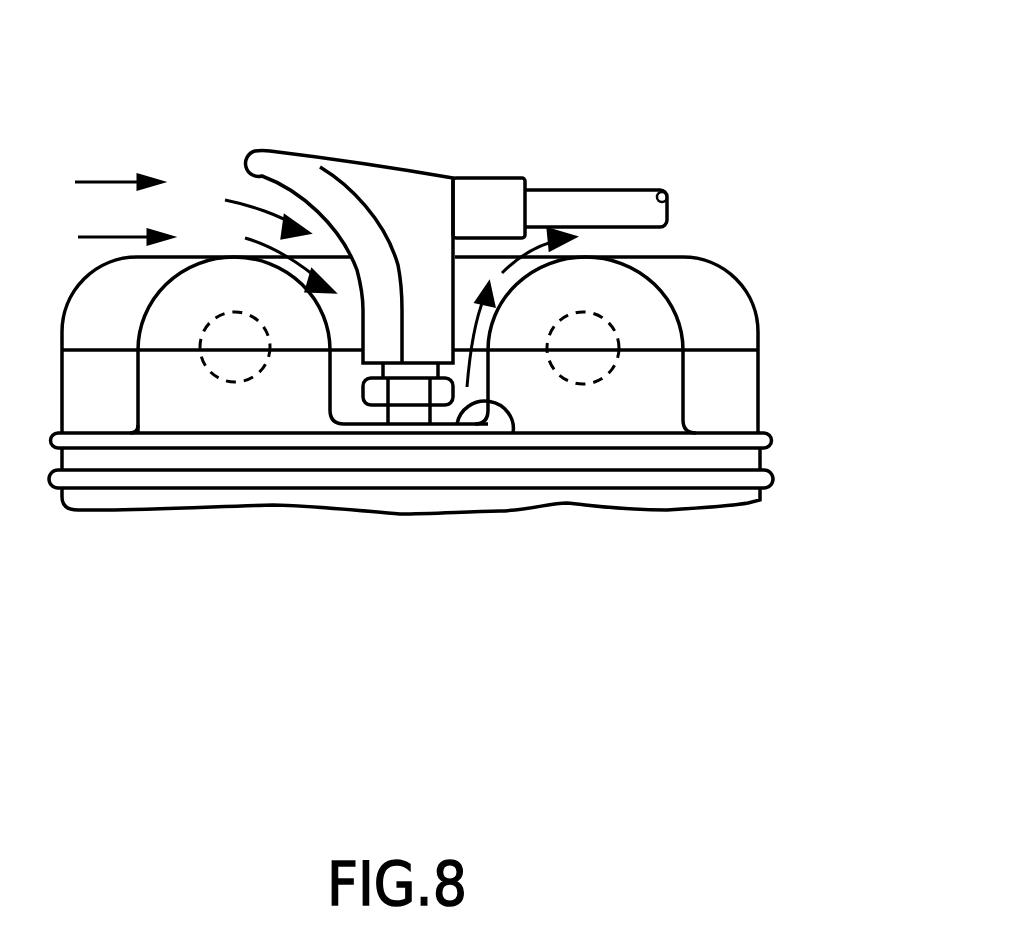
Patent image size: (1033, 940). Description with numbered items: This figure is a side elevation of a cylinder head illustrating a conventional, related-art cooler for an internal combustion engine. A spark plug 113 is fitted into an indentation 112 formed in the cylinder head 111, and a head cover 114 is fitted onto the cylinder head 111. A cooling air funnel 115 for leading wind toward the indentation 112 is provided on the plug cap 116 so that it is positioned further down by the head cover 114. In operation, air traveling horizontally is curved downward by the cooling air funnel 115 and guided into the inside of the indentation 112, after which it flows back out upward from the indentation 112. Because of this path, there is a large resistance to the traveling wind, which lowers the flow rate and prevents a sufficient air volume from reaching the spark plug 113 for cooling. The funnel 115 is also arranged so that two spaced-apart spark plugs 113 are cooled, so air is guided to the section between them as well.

The cylinder head 111 is at (663, 512).
The indentation 112 is at (513, 433).
The spark plug 113 is at (415, 392).
The head cover 114 is at (727, 275).
The cooling air funnel 115 is at (265, 178).
The plug cap 116 is at (422, 230).